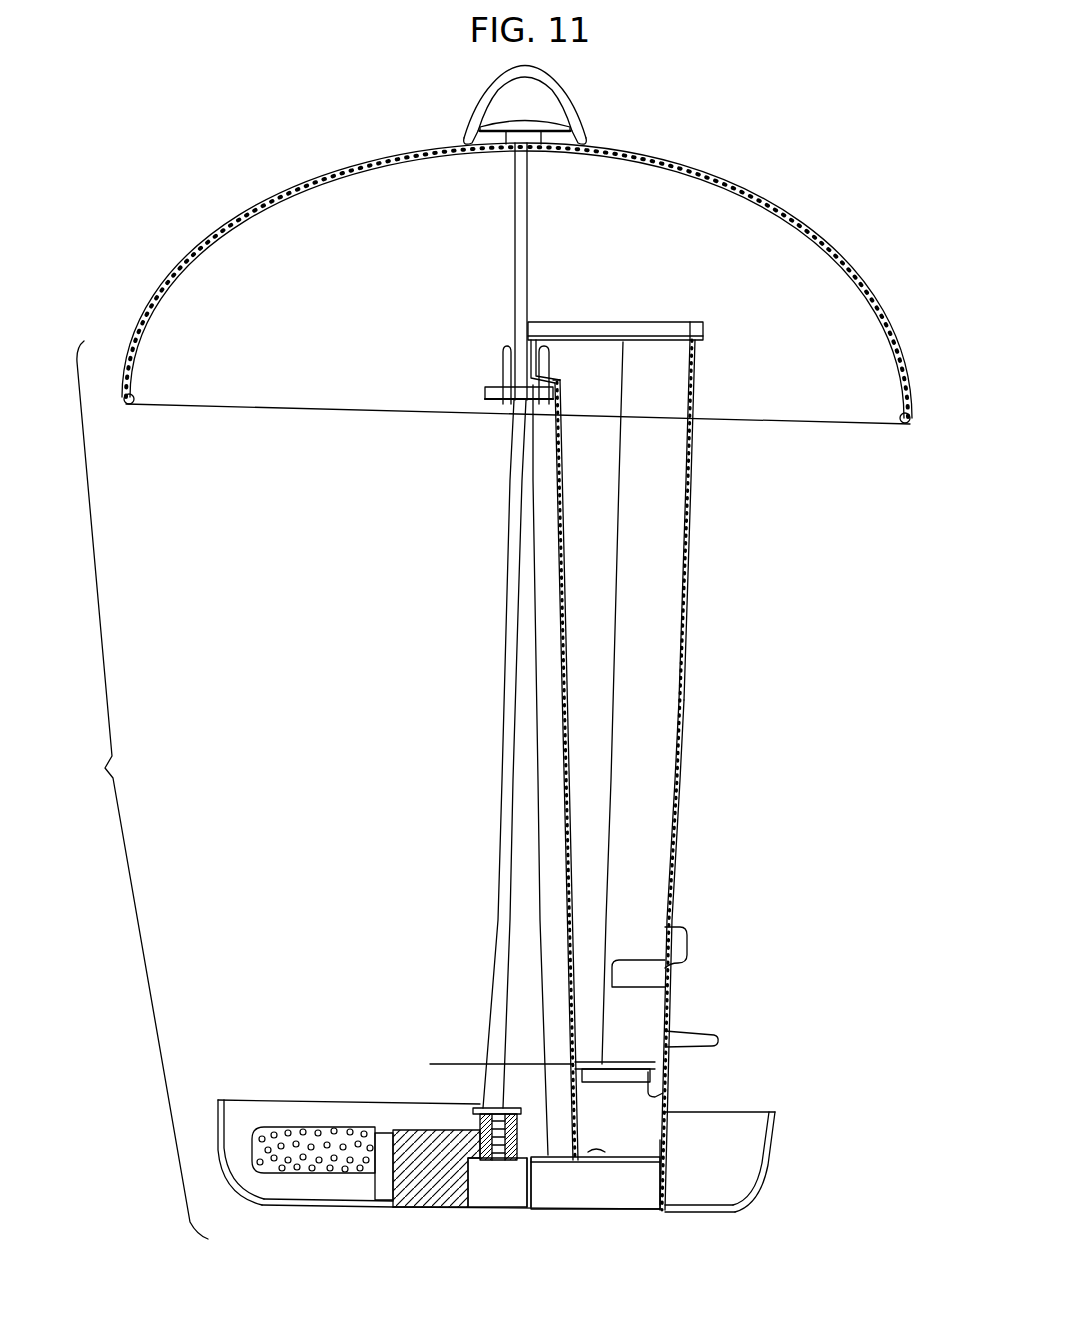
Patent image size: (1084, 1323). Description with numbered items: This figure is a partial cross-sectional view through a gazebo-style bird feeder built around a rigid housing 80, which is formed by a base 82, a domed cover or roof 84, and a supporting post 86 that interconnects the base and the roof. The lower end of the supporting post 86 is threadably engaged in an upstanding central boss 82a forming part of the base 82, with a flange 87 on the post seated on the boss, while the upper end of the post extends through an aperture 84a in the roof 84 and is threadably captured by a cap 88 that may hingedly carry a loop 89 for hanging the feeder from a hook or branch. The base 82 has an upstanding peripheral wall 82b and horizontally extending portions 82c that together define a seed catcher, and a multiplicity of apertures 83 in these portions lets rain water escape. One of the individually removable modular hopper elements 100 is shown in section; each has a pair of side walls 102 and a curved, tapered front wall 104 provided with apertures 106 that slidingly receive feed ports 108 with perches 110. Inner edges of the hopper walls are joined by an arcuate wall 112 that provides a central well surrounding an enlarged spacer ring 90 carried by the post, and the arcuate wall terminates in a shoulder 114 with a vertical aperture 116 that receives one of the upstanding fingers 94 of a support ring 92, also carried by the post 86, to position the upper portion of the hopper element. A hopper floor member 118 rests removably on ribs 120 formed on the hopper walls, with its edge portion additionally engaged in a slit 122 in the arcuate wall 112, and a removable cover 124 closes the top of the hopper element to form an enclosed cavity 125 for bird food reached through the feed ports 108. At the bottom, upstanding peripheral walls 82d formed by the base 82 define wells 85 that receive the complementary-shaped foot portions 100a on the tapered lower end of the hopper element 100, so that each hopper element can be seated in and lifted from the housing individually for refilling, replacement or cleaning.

The housing 80 is at (134, 790).
The base 82 is at (531, 1156).
The upstanding central boss 82a is at (478, 1110).
The upstanding peripheral wall 82b is at (773, 1146).
The horizontally extending portions 82c is at (701, 1213).
The upstanding peripheral walls 82d is at (665, 1140).
The apertures 83 is at (295, 1140).
The domed cover 84 is at (792, 213).
The aperture 84a is at (516, 148).
The wells 85 is at (591, 1152).
The supporting post 86 is at (504, 803).
The flange 87 is at (487, 1107).
The cap 88 is at (541, 128).
The loop 89 is at (491, 96).
The spacer ring 90 is at (481, 1062).
The support ring 92 is at (512, 398).
The upstanding fingers 94 is at (506, 360).
The hopper element 100 is at (598, 747).
The foot portions 100a is at (652, 1148).
The side walls 102 is at (598, 490).
The front wall 104 is at (677, 760).
The apertures 106 is at (687, 547).
The feed ports 108 is at (689, 937).
The perches 110 is at (698, 1036).
The arcuate wall 112 is at (552, 714).
The shoulder 114 is at (553, 380).
The aperture 116 is at (553, 382).
The hopper floor member 118 is at (574, 1064).
The ribs 120 is at (668, 1093).
The slit 122 is at (571, 1065).
The removable cover 124 is at (648, 336).
The enclosed cavity 125 is at (632, 629).